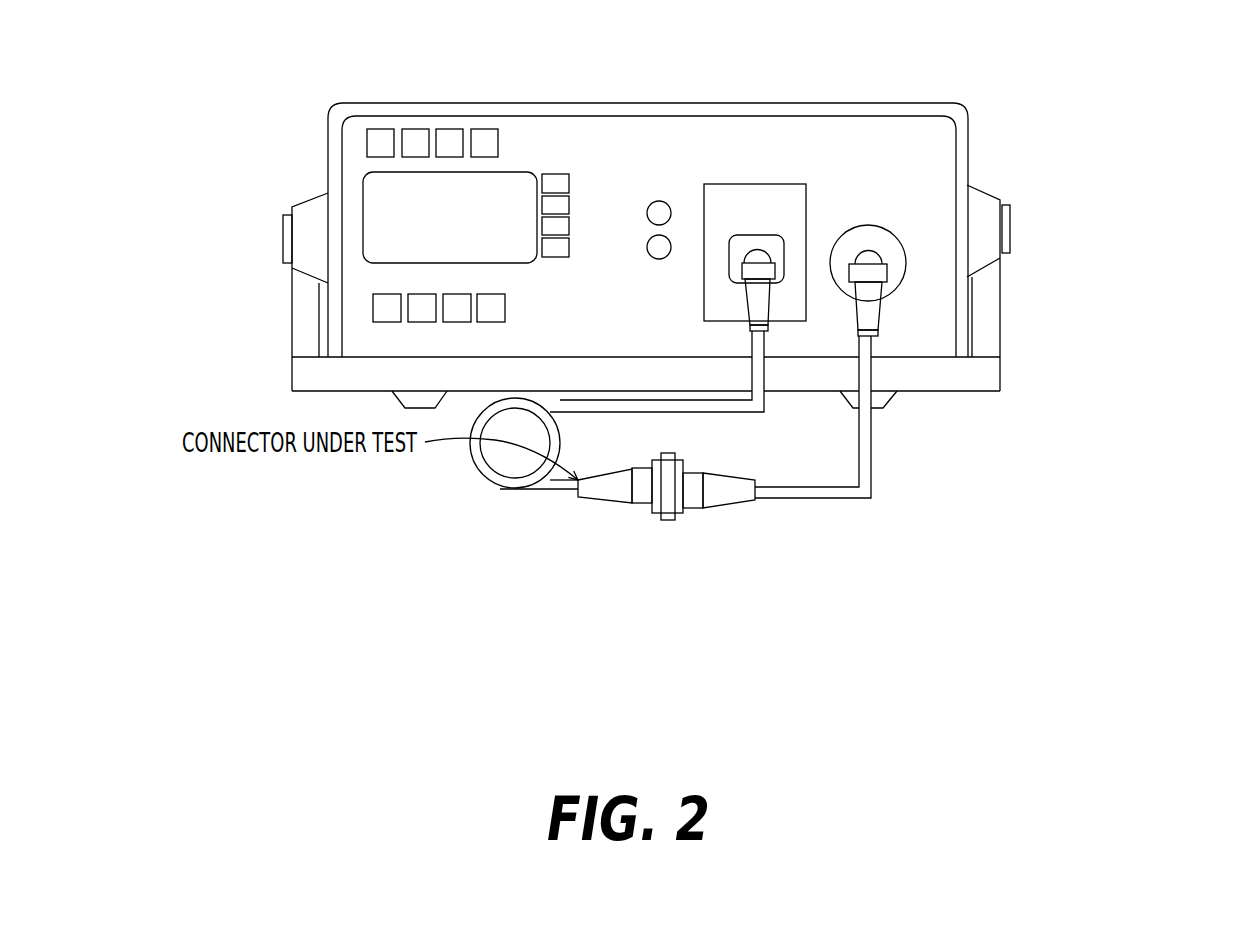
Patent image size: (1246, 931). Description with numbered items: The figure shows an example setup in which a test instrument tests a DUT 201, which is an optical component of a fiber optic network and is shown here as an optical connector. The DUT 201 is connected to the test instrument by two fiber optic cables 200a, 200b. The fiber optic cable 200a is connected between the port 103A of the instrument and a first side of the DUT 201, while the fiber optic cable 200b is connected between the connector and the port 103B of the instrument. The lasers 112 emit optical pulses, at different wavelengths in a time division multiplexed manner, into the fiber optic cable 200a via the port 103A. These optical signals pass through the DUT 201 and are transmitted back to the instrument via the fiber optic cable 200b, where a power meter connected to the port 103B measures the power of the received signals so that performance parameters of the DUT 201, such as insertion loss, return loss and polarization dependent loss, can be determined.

The port 103B is at (737, 214).
The lasers 112 is at (856, 208).
The port 103A is at (915, 242).
The fiber optic cable 200b is at (484, 507).
The fiber optic cable 200a is at (872, 502).
The DUT 201 is at (686, 528).